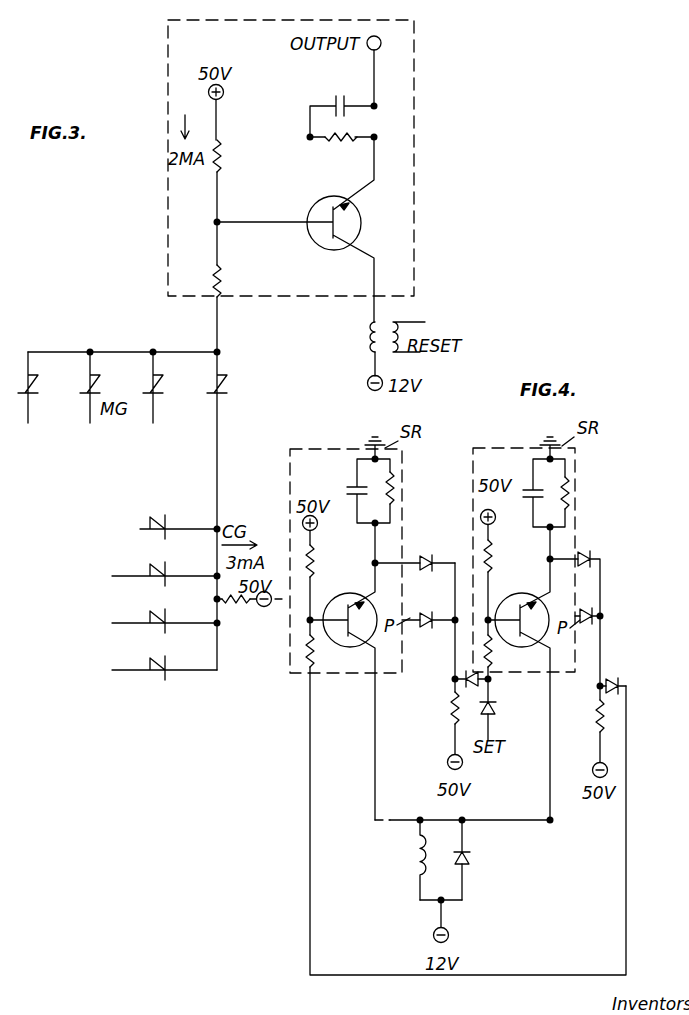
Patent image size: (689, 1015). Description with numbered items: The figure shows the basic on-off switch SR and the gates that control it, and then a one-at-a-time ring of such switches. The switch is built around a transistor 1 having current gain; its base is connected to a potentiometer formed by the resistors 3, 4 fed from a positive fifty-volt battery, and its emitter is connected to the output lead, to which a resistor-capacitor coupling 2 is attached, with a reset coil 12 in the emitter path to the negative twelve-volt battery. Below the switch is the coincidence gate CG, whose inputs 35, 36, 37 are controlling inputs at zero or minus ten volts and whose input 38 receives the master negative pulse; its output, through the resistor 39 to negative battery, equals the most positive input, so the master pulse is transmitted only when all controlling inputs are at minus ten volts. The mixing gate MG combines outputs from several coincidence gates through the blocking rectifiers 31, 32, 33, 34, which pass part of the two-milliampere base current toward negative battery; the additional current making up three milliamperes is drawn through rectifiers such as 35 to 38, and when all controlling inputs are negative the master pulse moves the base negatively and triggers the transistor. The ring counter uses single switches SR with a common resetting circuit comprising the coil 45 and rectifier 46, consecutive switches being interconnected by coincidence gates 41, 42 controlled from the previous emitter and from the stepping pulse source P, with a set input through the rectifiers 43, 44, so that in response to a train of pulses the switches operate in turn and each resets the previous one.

In FIG. 3, the transistor 1 is at (338, 198).
In FIG. 3, the resistor-capacitor coupling 2 is at (342, 118).
In FIG. 3, the potentiometer resistor 3 is at (225, 156).
In FIG. 3, the potentiometer resistor 4 is at (203, 281).
In FIG. 3, the reset coil 12 is at (384, 338).
In FIG. 3, the blocking rectifier 31 is at (38, 387).
In FIG. 3, the blocking rectifier 32 is at (100, 387).
In FIG. 3, the blocking rectifier 33 is at (162, 387).
In FIG. 3, the blocking rectifier 34 is at (226, 440).
In FIG. 3, the coincidence gate input rectifier 35 is at (178, 536).
In FIG. 3, the coincidence gate input rectifier 36 is at (164, 583).
In FIG. 3, the coincidence gate input rectifier 37 is at (164, 630).
In FIG. 3, the master pulse input rectifier 38 is at (164, 677).
In FIG. 3, the resistor 39 is at (236, 614).
In FIG. 4, the coincidence gate rectifier 41 is at (415, 553).
In FIG. 4, the coincidence gate rectifier 42 is at (428, 630).
In FIG. 4, the gate rectifier 43 is at (471, 686).
In FIG. 4, the set rectifier 44 is at (494, 712).
In FIG. 4, the common resetting coil 45 is at (404, 860).
In FIG. 4, the common resetting rectifier 46 is at (477, 860).